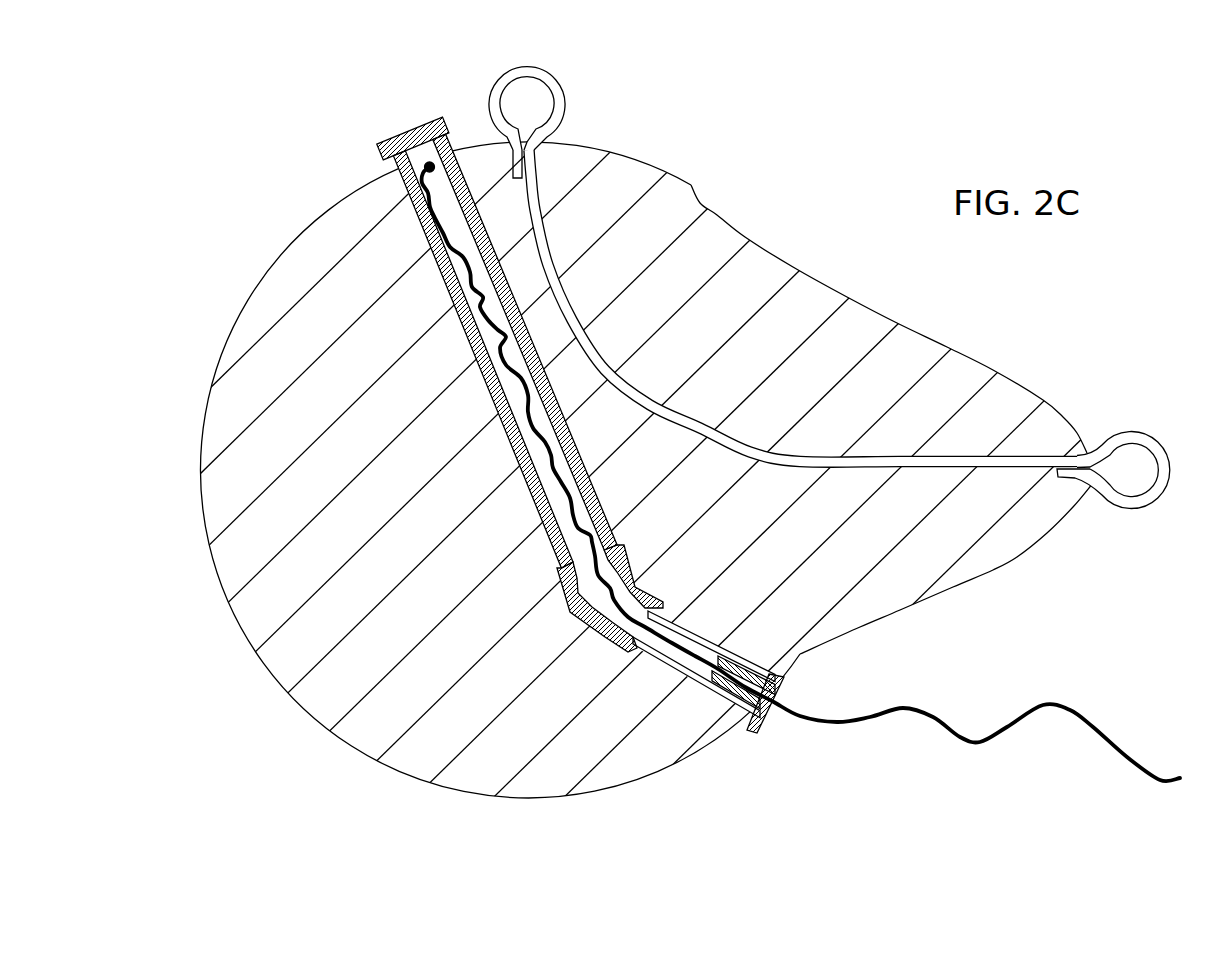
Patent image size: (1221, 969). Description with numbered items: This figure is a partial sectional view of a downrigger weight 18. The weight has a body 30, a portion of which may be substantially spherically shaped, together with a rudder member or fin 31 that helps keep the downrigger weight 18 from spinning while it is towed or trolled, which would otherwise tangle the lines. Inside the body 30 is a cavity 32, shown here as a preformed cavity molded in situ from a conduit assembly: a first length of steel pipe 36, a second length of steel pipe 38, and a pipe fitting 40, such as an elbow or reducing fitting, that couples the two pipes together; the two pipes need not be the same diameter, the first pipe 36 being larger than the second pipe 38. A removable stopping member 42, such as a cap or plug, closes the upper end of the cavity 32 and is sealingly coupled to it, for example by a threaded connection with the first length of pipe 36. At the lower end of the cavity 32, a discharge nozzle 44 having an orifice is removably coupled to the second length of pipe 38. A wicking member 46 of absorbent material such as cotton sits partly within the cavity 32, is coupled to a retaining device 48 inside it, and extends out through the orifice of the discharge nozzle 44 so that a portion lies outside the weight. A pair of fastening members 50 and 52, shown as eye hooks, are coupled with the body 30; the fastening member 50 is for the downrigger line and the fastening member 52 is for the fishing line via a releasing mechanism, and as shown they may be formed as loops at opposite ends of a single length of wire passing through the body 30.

The downrigger weight 18 is at (840, 186).
The body 30 is at (683, 183).
The rudder member or fin 31 is at (933, 333).
The cavity 32 is at (452, 196).
The first length of steel pipe 36 is at (437, 263).
The second length of steel pipe 38 is at (690, 672).
The pipe fitting 40 is at (607, 638).
The removable stopping member 42 is at (400, 134).
The discharge nozzle 44 is at (782, 696).
The wicking member 46 is at (943, 720).
The retaining device 48 is at (428, 162).
The fastening member 50 is at (565, 99).
The fastening member 52 is at (1110, 438).